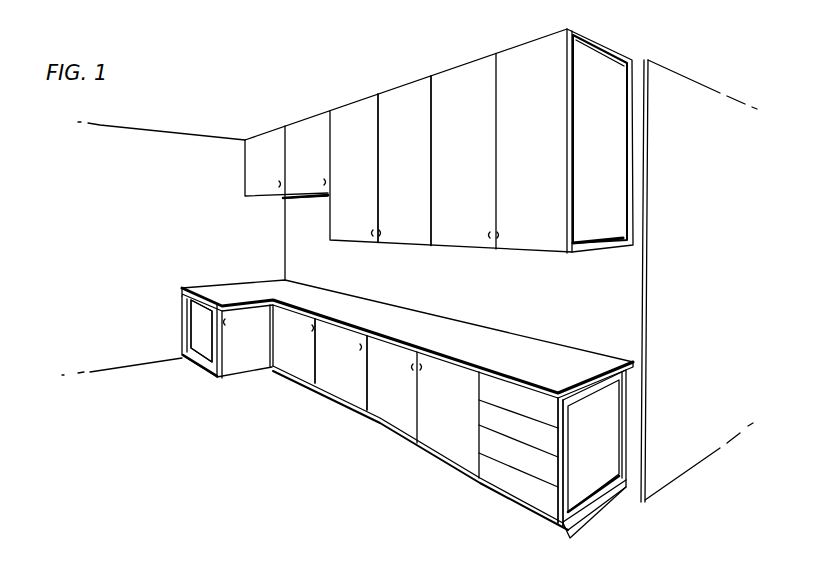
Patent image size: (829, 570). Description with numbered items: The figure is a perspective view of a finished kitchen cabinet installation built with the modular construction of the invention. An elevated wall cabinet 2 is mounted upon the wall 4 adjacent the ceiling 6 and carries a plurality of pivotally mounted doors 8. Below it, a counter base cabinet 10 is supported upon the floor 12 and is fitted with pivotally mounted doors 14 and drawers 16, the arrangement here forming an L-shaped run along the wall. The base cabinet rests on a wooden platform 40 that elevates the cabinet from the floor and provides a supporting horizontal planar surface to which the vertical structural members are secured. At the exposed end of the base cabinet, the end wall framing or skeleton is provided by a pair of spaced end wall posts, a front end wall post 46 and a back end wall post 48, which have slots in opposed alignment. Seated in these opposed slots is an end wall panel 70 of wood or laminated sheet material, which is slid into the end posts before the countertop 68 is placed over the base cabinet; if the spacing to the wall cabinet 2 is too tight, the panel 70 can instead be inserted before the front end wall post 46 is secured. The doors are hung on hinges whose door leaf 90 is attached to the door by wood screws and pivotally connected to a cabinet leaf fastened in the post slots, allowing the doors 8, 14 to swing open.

The wall cabinet 2 is at (460, 86).
The wall 4 is at (312, 242).
The ceiling 6 is at (242, 113).
The doors 8 is at (393, 101).
The counter base cabinet 10 is at (472, 343).
The floor 12 is at (388, 487).
The doors 14 is at (368, 412).
The drawers 16 is at (543, 440).
The wooden platform 40 is at (606, 506).
The front end wall post 46 is at (566, 492).
The back end wall post 48 is at (627, 397).
The countertop 68 is at (392, 314).
The end wall panel 70 is at (607, 450).
The door leaf 90 is at (200, 327).